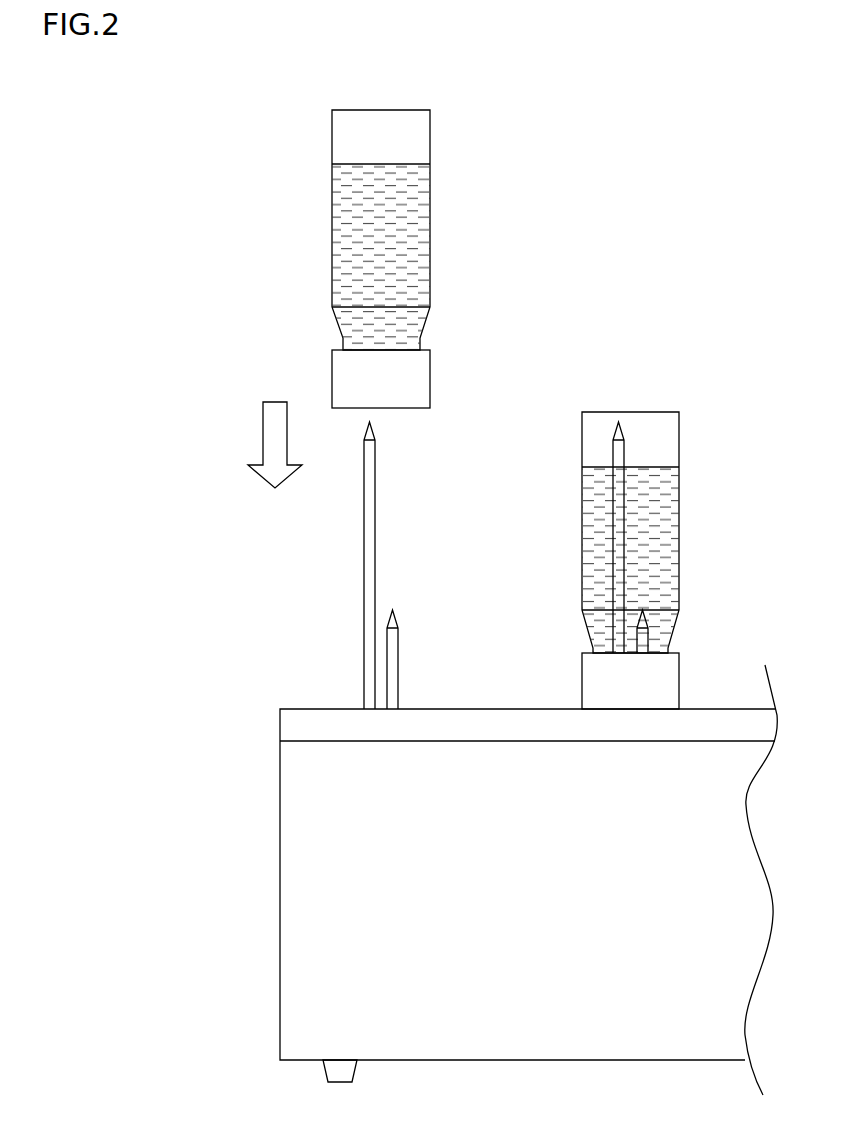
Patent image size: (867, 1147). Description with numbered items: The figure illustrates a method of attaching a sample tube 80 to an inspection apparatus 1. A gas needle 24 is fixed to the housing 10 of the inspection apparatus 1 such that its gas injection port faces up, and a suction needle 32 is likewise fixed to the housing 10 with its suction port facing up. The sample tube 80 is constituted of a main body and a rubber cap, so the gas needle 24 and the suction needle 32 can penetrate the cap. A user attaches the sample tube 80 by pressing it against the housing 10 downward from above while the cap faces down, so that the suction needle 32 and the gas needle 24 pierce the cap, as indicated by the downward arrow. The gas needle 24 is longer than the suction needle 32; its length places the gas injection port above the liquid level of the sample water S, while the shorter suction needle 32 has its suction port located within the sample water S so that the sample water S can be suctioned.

The inspection apparatus 1 is at (217, 647).
The housing 10 is at (280, 993).
The gas needle 24 is at (375, 600).
The suction needle 32 is at (398, 640).
The sample tube 80 is at (431, 259).
The sample water S is at (343, 241).